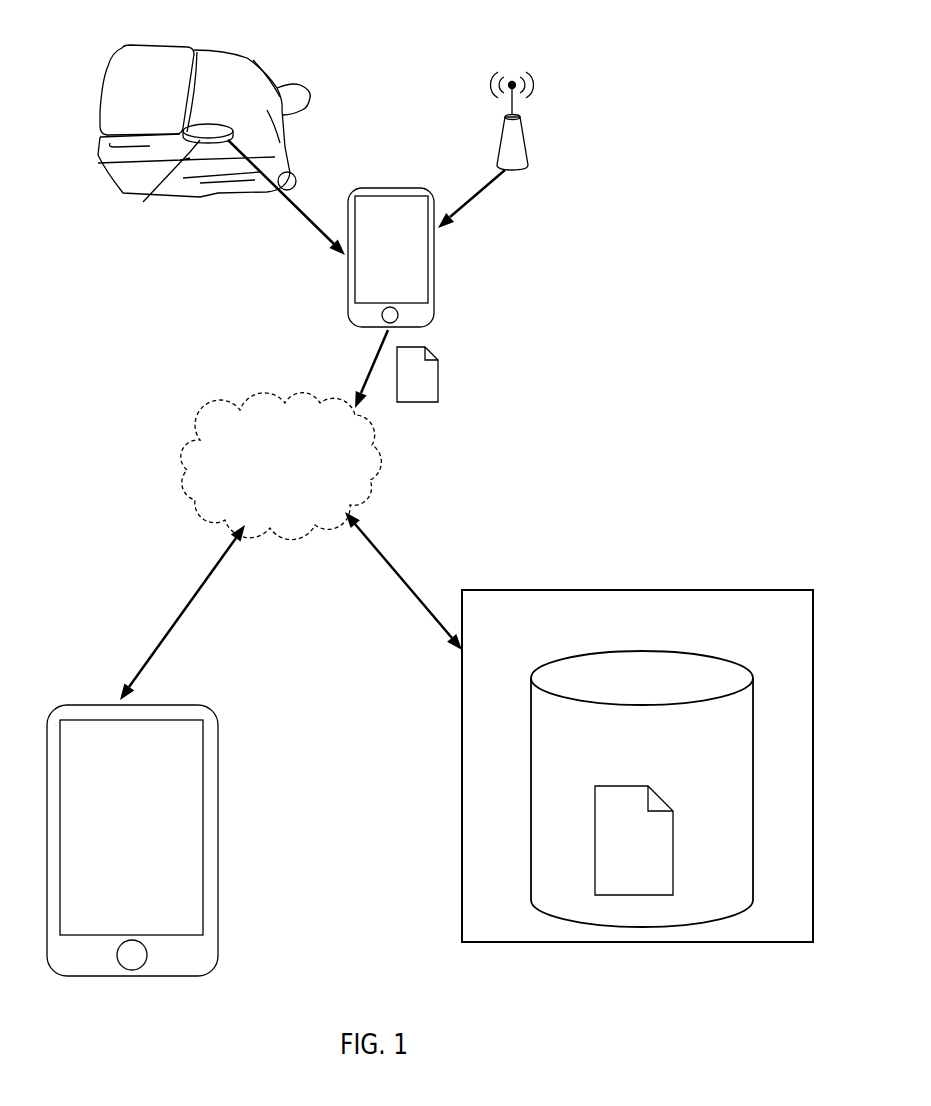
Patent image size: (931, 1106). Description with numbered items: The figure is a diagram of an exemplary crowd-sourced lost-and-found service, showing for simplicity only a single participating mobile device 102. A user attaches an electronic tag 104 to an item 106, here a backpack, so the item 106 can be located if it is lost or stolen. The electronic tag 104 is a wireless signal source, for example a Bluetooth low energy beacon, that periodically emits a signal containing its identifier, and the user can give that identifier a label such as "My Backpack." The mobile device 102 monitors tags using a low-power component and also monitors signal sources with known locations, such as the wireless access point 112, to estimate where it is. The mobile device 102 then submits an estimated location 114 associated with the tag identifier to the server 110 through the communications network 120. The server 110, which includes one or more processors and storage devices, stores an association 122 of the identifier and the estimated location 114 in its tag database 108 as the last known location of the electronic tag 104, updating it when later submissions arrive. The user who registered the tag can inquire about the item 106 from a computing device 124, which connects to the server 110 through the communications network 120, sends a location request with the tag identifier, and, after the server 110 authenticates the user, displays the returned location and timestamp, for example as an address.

The mobile device 102 is at (347, 300).
The electronic tag 104 is at (197, 137).
The item 106 is at (195, 49).
The tag database 108 is at (531, 862).
The server 110 is at (461, 678).
The wireless access point 112 is at (503, 117).
The estimated location 114 is at (439, 378).
The communications network 120 is at (368, 483).
The association 122 is at (618, 895).
The computing device 124 is at (220, 838).